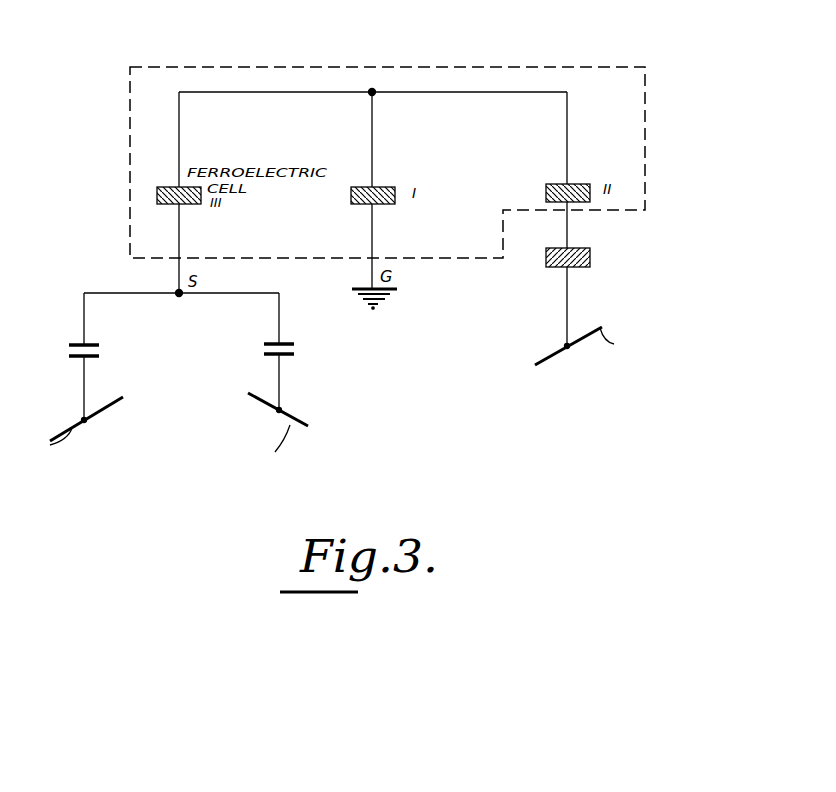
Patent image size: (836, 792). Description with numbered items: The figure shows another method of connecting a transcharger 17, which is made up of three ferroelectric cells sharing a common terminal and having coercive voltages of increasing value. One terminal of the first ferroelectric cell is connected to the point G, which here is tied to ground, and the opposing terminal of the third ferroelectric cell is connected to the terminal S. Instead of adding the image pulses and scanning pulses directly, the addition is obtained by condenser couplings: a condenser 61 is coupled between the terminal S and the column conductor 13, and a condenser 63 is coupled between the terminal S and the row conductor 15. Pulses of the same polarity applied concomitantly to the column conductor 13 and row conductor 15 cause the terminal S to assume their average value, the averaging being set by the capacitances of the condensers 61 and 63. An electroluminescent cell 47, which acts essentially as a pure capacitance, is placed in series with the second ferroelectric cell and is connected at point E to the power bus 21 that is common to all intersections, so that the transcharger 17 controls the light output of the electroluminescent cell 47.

The transcharger 17 is at (347, 65).
The condenser 61 is at (90, 343).
The condenser 63 is at (291, 341).
The column conductor 13 is at (110, 406).
The row conductor 15 is at (298, 420).
The electroluminescent cell 47 is at (563, 268).
The power bus 21 is at (556, 353).